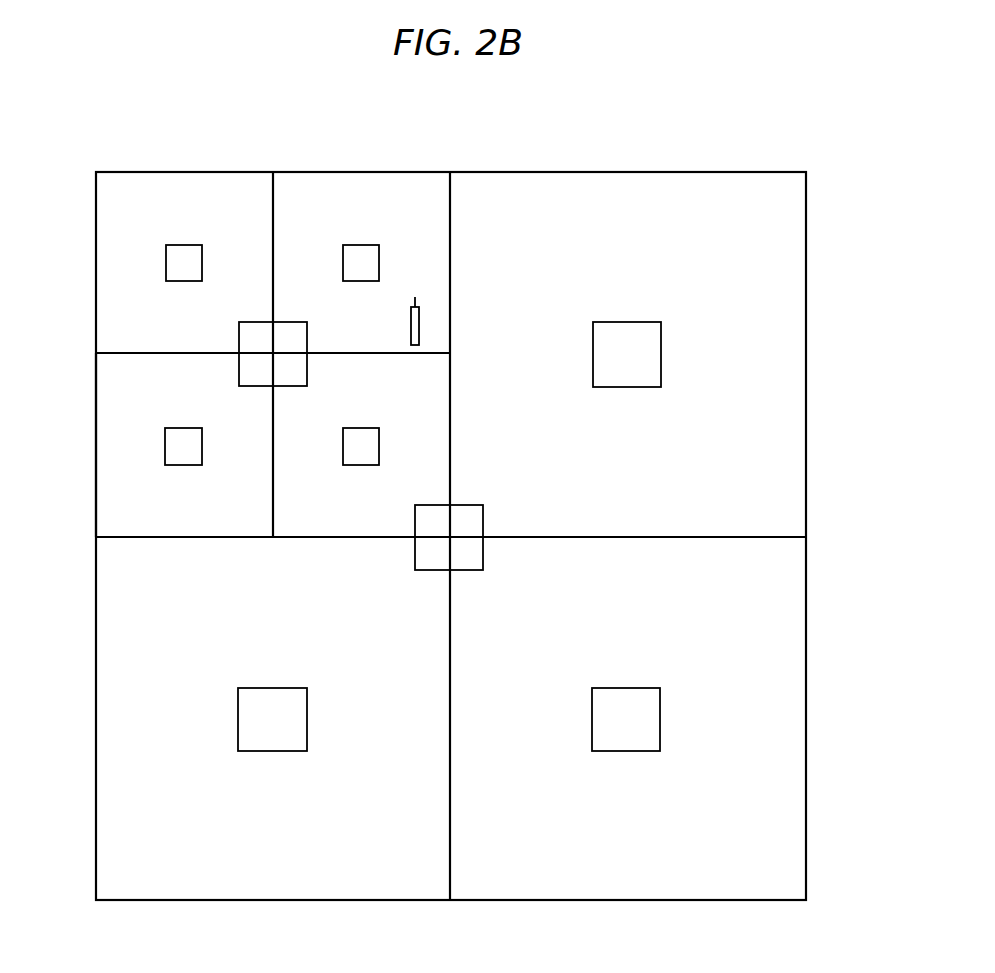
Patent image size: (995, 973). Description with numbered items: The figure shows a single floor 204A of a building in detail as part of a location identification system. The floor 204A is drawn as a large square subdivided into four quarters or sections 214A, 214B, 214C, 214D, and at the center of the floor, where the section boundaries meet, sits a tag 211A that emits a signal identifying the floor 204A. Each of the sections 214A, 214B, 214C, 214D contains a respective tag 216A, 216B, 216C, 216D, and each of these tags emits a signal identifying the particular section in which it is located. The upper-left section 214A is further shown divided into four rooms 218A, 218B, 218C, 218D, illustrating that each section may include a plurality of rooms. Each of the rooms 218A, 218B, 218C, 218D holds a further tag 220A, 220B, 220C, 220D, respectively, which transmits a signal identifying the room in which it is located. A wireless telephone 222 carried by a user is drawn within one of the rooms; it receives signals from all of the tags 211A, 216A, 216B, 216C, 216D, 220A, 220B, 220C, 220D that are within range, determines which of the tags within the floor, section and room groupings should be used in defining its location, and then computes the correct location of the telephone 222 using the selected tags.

The floor 204A is at (806, 268).
The section 214A is at (320, 170).
The section 214B is at (698, 170).
The section 214C is at (316, 900).
The section 214D is at (677, 900).
The room 218A is at (96, 238).
The room 218B is at (395, 170).
The room 218C is at (96, 414).
The room 218D is at (450, 465).
The tag 220A is at (188, 245).
The tag 220B is at (365, 245).
The tag 220C is at (189, 428).
The tag 220D is at (367, 428).
The wireless telephone 222 is at (411, 335).
The tag 216A is at (293, 386).
The tag 216B is at (646, 387).
The tag 216C is at (292, 751).
The tag 216D is at (647, 751).
The tag 211A is at (466, 570).